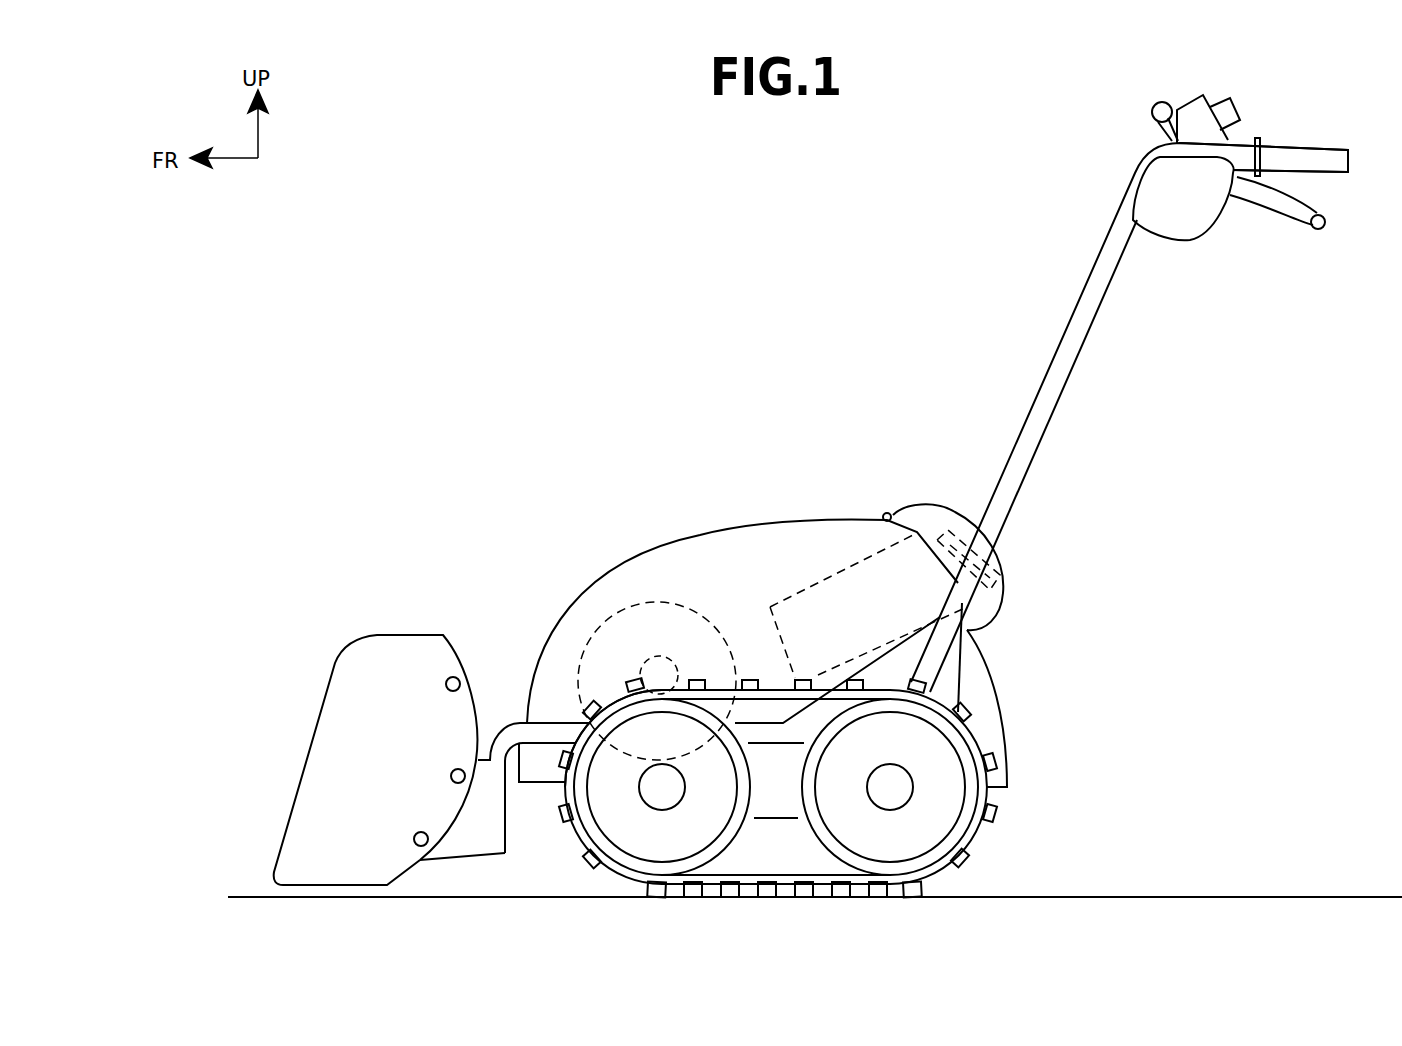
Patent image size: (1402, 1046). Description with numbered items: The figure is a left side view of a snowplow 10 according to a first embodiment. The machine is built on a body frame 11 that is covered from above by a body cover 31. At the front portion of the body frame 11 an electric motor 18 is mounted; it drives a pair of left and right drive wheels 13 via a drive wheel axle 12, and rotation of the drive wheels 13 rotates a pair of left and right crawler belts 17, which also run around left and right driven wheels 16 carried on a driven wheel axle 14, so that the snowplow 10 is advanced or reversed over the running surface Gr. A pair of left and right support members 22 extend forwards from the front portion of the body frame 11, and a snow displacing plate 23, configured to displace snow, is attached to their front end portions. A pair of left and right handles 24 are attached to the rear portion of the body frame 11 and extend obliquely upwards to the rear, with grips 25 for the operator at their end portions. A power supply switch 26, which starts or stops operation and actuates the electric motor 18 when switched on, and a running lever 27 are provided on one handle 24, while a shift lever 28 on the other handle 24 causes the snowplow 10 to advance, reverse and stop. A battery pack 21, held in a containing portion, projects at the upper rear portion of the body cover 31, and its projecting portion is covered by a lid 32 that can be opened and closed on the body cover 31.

The snowplow 10 is at (456, 349).
The body frame 11 is at (777, 810).
The drive wheel axle 12 is at (658, 793).
The drive wheels 13 is at (622, 716).
The driven wheel axle 14 is at (889, 790).
The driven wheels 16 is at (958, 745).
The crawler belts 17 is at (797, 683).
The electric motor 18 is at (628, 607).
The battery pack 21 is at (848, 567).
The support members 22 is at (508, 738).
The snow displacing plate 23 is at (382, 632).
The handles 24 is at (1110, 234).
The grips 25 is at (1313, 152).
The power supply switch 26 is at (1228, 118).
The running lever 27 is at (1282, 203).
The shift lever 28 is at (1158, 105).
The body cover 31 is at (682, 540).
The lid 32 is at (948, 507).
The running surface Gr is at (1215, 895).